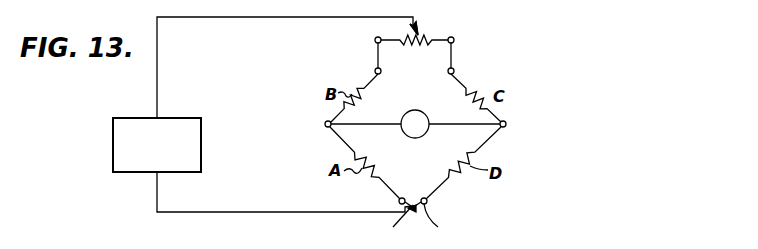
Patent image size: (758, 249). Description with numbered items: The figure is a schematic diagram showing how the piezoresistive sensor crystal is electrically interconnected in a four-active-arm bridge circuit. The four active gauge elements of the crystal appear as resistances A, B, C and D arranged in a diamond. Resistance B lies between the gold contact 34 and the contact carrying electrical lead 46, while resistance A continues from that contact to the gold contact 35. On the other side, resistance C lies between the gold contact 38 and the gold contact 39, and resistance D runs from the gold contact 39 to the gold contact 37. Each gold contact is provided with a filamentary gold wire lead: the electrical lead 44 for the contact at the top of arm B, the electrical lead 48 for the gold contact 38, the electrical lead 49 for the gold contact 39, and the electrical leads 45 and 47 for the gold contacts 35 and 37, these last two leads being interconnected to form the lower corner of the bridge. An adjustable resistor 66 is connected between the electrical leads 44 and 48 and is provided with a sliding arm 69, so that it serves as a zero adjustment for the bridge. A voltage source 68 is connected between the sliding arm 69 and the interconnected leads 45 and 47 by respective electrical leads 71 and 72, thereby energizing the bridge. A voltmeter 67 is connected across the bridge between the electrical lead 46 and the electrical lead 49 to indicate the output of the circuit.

The electrical lead 71 is at (311, 17).
The electrical lead 72 is at (297, 212).
The voltage source 68 is at (213, 107).
The adjustable resistor 66 is at (436, 40).
The sliding arm 69 is at (420, 32).
The electrical lead 44 is at (376, 52).
The gold contact 34 is at (375, 71).
The electrical lead 48 is at (453, 57).
The gold contact 38 is at (455, 71).
The electrical lead 46 is at (376, 123).
The gold contact 39 is at (506, 122).
The electrical lead 49 is at (469, 123).
The voltmeter 67 is at (427, 112).
The gold contact 35 is at (398, 201).
The gold contact 37 is at (427, 201).
The electrical lead 45 is at (399, 224).
The electrical lead 47 is at (439, 224).